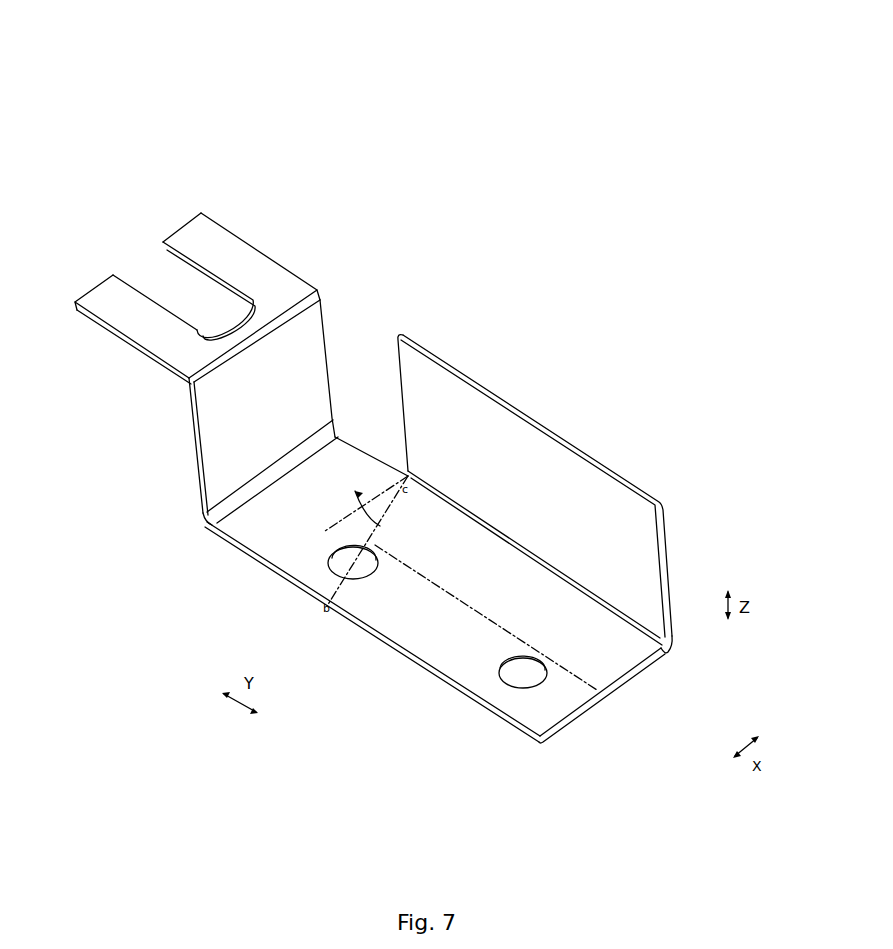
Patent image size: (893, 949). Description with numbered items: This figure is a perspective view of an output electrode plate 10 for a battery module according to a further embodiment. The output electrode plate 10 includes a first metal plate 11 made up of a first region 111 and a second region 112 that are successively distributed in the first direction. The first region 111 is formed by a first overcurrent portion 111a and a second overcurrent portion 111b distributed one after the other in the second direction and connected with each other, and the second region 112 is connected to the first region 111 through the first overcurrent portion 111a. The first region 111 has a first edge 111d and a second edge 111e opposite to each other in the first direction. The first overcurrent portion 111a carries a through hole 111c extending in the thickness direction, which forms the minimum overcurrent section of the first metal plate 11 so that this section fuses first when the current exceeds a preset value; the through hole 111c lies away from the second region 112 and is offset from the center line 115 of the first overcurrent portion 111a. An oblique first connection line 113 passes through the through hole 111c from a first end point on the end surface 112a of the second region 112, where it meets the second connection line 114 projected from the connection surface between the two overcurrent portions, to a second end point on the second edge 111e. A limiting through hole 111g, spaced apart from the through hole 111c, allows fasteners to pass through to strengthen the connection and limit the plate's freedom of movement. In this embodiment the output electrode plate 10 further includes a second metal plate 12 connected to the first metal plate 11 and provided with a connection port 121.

The output electrode plate 10 is at (416, 47).
The first metal plate 11 is at (567, 357).
The first region 111 is at (252, 625).
The first overcurrent portion 111a is at (312, 572).
The second overcurrent portion 111b is at (250, 530).
The through hole 111c is at (377, 570).
The first edge 111d is at (664, 651).
The second edge 111e is at (460, 685).
The limiting through hole 111g is at (525, 678).
The second region 112 is at (583, 477).
The end surface 112a is at (399, 350).
The first connection line 113 is at (343, 600).
The second connection line 114 is at (383, 530).
The center line 115 is at (597, 692).
The second metal plate 12 is at (148, 328).
The connection port 121 is at (133, 259).